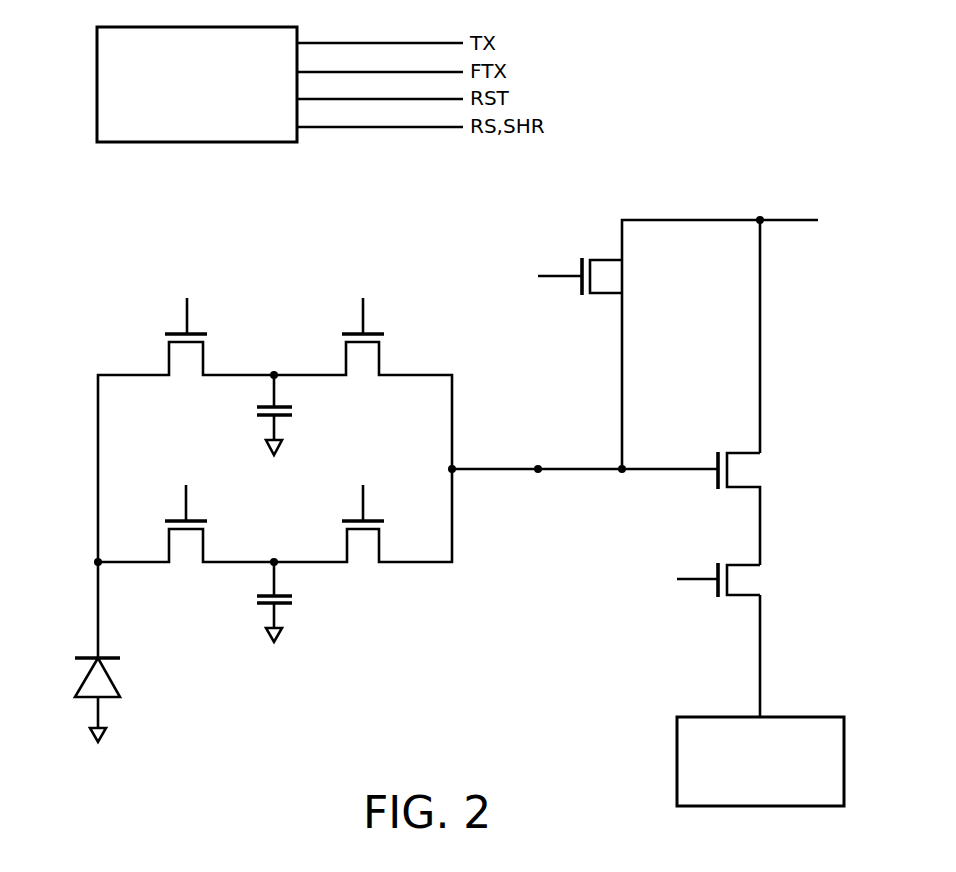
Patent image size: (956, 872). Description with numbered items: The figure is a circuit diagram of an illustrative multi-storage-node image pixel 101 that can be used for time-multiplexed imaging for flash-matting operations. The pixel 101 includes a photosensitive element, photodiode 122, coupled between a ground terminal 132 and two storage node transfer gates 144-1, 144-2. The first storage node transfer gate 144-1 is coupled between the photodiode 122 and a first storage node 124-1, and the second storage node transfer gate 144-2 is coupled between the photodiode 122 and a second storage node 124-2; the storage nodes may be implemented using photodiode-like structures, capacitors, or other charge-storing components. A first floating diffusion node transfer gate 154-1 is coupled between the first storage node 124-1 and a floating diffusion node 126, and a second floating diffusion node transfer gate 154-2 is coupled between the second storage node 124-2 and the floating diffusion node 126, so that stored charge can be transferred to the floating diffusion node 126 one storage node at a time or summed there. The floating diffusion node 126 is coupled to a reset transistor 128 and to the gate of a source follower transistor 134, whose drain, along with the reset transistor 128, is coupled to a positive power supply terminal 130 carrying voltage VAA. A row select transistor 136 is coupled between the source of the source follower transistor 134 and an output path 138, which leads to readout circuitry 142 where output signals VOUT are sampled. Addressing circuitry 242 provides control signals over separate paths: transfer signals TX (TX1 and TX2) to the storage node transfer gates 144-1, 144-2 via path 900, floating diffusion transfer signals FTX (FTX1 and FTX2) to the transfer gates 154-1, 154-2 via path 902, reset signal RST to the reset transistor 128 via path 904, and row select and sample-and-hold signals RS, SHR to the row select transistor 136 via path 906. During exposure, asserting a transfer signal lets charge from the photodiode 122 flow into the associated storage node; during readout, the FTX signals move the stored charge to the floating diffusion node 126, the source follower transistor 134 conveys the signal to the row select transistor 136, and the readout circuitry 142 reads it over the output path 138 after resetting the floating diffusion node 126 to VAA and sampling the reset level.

The multi-storage-node image pixel 101 is at (654, 129).
The photodiode 122 is at (92, 680).
The first storage node 124-1 is at (274, 372).
The second storage node 124-2 is at (274, 560).
The floating diffusion node 126 is at (538, 465).
The reset transistor 128 is at (607, 262).
The positive power supply terminal 130 is at (795, 218).
The ground terminal 132 is at (92, 735).
The source follower transistor 134 is at (742, 456).
The row select transistor 136 is at (744, 594).
The output path 138 is at (762, 647).
The readout circuitry 142 is at (797, 808).
The first storage node transfer gate 144-1 is at (186, 368).
The second storage node transfer gate 144-2 is at (186, 555).
The first floating diffusion node transfer gate 154-1 is at (360, 370).
The second floating diffusion node transfer gate 154-2 is at (360, 557).
The addressing circuitry 242 is at (160, 143).
The path 900 is at (365, 43).
The path 902 is at (390, 72).
The path 904 is at (368, 99).
The path 906 is at (394, 127).